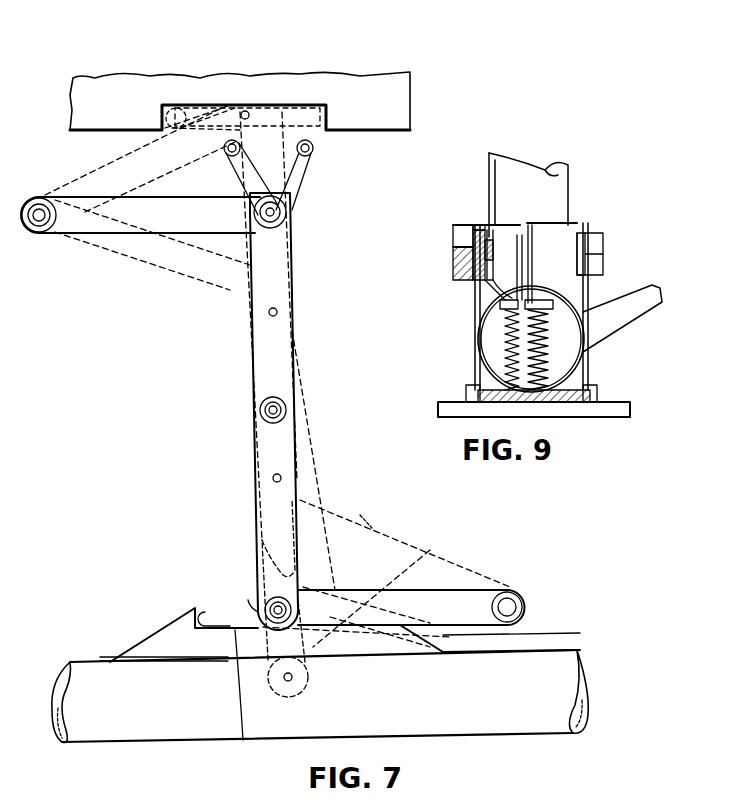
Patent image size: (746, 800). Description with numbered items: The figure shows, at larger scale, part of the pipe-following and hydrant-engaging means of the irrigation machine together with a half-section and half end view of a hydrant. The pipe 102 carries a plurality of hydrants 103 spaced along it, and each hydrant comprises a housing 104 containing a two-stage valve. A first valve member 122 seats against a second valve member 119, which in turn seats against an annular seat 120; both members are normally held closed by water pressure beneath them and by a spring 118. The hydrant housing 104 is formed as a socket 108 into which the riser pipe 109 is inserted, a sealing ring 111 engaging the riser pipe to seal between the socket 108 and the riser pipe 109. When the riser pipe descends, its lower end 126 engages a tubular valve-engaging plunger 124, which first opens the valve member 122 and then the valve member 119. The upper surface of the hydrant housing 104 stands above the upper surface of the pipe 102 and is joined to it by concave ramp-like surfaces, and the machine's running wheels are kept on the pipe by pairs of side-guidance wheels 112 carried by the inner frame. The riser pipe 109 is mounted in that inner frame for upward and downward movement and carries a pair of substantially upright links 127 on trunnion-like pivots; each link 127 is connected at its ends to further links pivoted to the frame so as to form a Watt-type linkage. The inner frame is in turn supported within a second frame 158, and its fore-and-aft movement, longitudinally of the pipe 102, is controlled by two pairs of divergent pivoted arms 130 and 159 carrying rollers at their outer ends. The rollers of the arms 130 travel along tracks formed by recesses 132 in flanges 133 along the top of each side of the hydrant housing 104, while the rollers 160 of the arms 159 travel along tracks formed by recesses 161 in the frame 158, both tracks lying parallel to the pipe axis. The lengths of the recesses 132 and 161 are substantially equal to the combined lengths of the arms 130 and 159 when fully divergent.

In FIG. 7, the pipe 102 is at (555, 660).
In FIG. 9, the pipe 102 is at (583, 365).
In FIG. 7, the hydrant 103 is at (213, 700).
In FIG. 9, the hydrant 103 is at (445, 259).
In FIG. 9, the hydrant housing 104 is at (622, 310).
In FIG. 9, the socket 108 is at (489, 153).
In FIG. 9, the riser pipe 109 is at (560, 180).
In FIG. 9, the sealing ring 111 is at (478, 227).
In FIG. 9, the side-guidance wheels 112 is at (470, 340).
In FIG. 9, the spring 118 is at (548, 350).
In FIG. 9, the second valve member 119 is at (478, 300).
In FIG. 9, the annular seat 120 is at (490, 287).
In FIG. 9, the first valve member 122 is at (545, 300).
In FIG. 9, the tubular valve-engaging plunger 124 is at (530, 250).
In FIG. 9, the lower end of the riser pipe 126 is at (523, 222).
In FIG. 7, the upright links 127 is at (277, 333).
In FIG. 7, the pivoted arms 130 is at (247, 600).
In FIG. 7, the recesses 132 is at (237, 701).
In FIG. 9, the recesses 132 is at (462, 235).
In FIG. 9, the flanges 133 is at (473, 265).
In FIG. 7, the frame 158 is at (382, 74).
In FIG. 7, the pivoted arms 159 is at (240, 150).
In FIG. 7, the rollers 160 is at (308, 158).
In FIG. 7, the recesses 161 is at (290, 105).